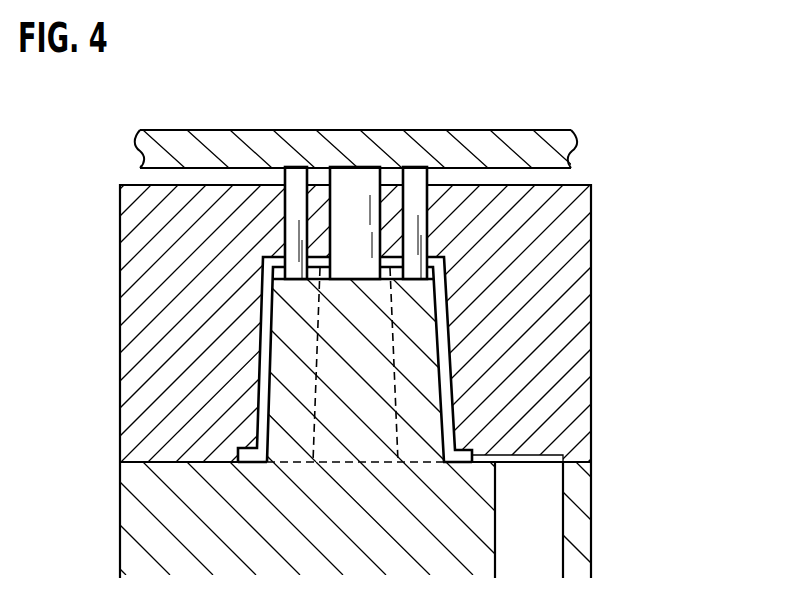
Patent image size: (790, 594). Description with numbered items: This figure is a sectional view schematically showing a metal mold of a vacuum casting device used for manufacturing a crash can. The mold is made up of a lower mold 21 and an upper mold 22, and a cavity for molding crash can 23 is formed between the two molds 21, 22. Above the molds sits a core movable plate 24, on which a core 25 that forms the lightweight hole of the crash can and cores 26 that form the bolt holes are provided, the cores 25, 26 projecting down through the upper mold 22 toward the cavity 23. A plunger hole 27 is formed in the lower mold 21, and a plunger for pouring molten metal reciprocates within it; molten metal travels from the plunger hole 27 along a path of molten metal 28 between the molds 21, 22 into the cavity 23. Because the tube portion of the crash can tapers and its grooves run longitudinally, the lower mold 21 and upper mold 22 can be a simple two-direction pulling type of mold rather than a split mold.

The lower mold 21 is at (120, 507).
The upper mold 22 is at (120, 343).
The cavity for molding crash can 23 is at (262, 313).
The core movable plate 24 is at (516, 140).
The core 25 is at (350, 180).
The cores 26 is at (285, 198).
The plunger hole 27 is at (552, 522).
The path of molten metal 28 is at (530, 457).